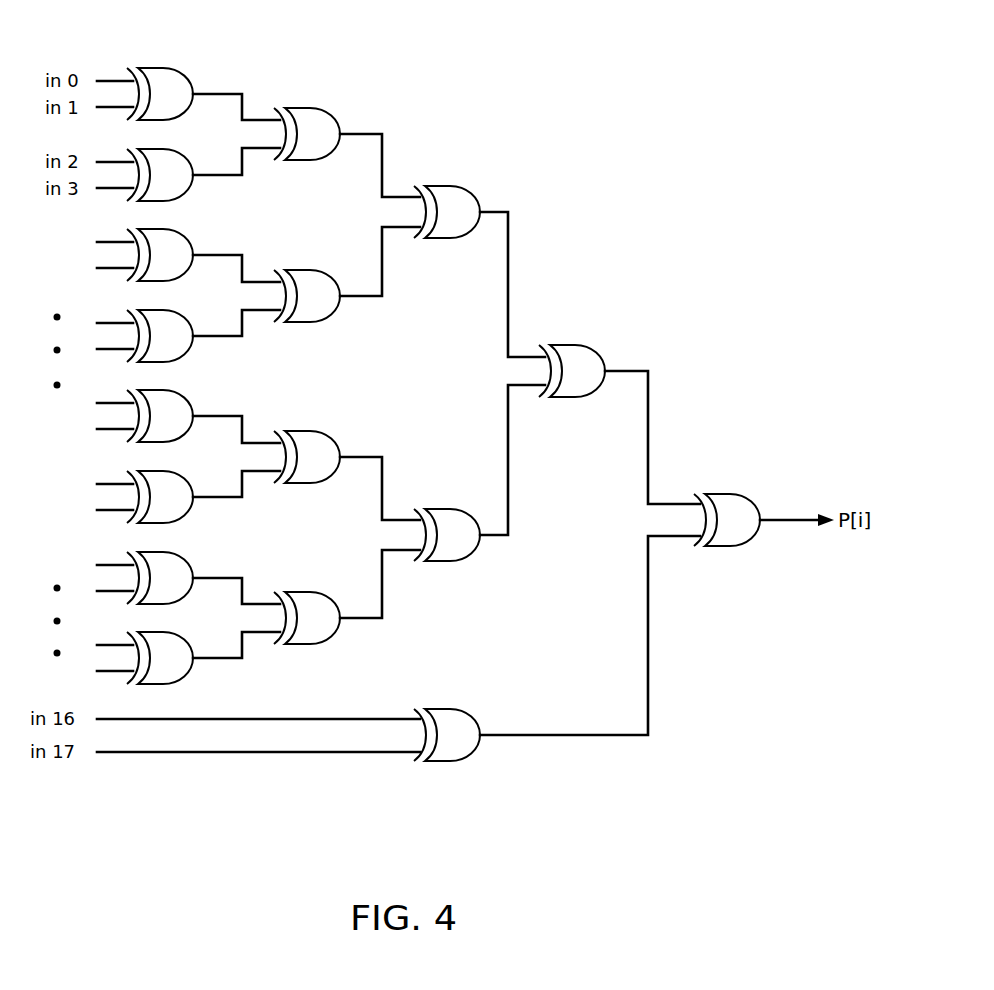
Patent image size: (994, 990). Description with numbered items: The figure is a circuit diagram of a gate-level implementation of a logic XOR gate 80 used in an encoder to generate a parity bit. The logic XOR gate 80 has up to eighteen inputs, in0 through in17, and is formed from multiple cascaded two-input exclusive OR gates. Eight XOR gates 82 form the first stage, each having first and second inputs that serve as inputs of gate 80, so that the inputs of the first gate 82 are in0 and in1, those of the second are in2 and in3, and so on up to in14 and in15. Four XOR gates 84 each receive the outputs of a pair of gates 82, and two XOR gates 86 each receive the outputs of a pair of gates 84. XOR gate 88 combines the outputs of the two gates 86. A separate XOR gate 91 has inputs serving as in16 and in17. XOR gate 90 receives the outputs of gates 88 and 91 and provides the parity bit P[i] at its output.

The logic XOR gate 80 is at (672, 76).
The XOR gates 82 is at (195, 55).
The XOR gates 84 is at (321, 274).
The XOR gates 86 is at (444, 188).
The XOR gate 88 is at (572, 349).
The XOR gate 90 is at (732, 500).
The XOR gate 91 is at (444, 716).